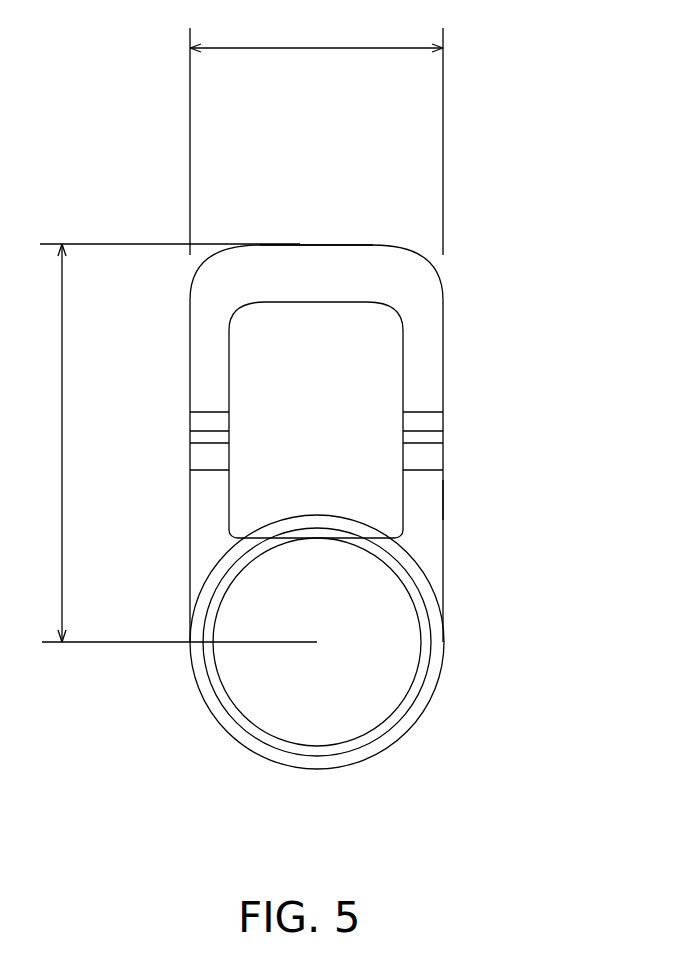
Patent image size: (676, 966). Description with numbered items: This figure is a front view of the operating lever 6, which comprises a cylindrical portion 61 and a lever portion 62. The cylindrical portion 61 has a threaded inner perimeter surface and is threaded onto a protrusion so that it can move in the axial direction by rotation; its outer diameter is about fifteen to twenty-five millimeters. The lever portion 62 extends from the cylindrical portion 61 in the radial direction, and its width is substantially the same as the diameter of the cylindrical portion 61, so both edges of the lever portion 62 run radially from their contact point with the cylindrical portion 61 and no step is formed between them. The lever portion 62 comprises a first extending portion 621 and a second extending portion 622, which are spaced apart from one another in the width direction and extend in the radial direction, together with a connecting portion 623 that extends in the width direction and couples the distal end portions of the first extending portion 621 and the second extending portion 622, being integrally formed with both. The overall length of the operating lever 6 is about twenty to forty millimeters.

The operating lever 6 is at (484, 190).
The cylindrical portion 61 is at (447, 668).
The lever portion 62 is at (452, 373).
The first extending portion 621 is at (190, 478).
The second extending portion 622 is at (443, 493).
The connecting portion 623 is at (299, 244).